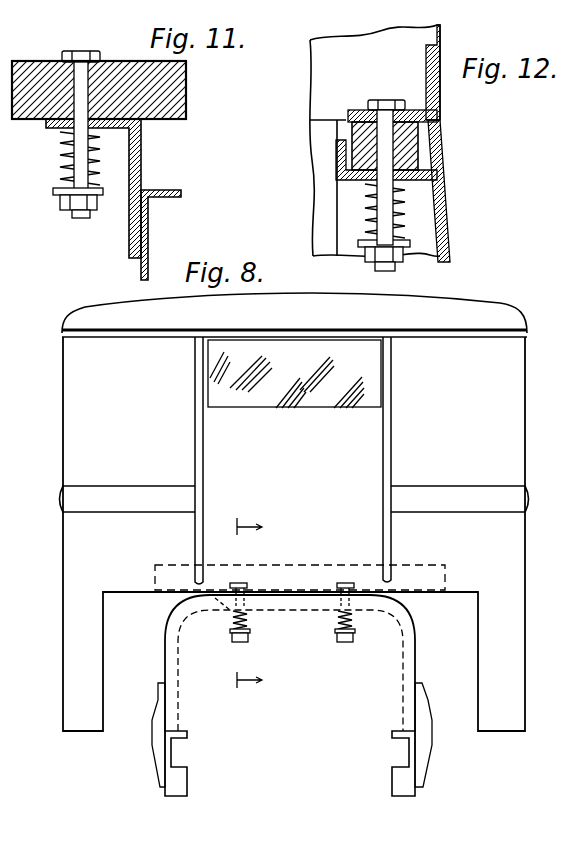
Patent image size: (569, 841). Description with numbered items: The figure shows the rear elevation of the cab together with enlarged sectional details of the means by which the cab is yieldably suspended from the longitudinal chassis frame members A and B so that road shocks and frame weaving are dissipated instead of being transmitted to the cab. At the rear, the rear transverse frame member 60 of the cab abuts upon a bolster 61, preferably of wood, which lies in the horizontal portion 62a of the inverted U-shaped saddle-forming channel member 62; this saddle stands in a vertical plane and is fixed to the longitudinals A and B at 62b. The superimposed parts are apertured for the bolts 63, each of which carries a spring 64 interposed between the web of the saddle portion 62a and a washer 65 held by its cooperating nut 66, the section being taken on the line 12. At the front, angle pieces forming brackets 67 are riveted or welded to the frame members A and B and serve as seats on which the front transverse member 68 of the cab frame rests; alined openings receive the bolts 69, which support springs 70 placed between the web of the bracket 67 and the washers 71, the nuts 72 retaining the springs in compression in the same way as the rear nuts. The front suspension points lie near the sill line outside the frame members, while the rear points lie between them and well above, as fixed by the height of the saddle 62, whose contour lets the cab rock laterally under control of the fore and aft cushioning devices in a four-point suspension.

In FIG. 8, the section line 12 is at (251, 606).
In FIG. 12, the rear transverse frame member 60 is at (426, 60).
In FIG. 8, the rear transverse frame member 60 is at (312, 564).
In FIG. 12, the bolster 61 is at (437, 126).
In FIG. 12, the saddle-forming channel member 62 is at (439, 191).
In FIG. 8, the saddle-forming channel member 62 is at (180, 700).
In FIG. 12, the horizontal portion of saddle 62a is at (432, 150).
In FIG. 8, the horizontal portion of saddle 62a is at (262, 616).
In FIG. 8, the saddle attachment 62b is at (403, 722).
In FIG. 12, the bolt 63 is at (354, 140).
In FIG. 8, the bolt 63 is at (242, 584).
In FIG. 12, the spring 64 is at (440, 212).
In FIG. 8, the spring 64 is at (345, 622).
In FIG. 12, the washer 65 is at (412, 243).
In FIG. 8, the washer 65 is at (356, 640).
In FIG. 12, the nut 66 is at (404, 262).
In FIG. 8, the nut 66 is at (239, 643).
In FIG. 11, the bracket 67 is at (143, 160).
In FIG. 11, the front transverse member 68 is at (172, 96).
In FIG. 11, the bolt 69 is at (78, 136).
In FIG. 11, the spring 70 is at (58, 185).
In FIG. 11, the washer 71 is at (106, 192).
In FIG. 11, the nut 72 is at (66, 210).
In FIG. 8, the chassis frame member A is at (405, 750).
In FIG. 11, the chassis frame member B is at (150, 221).
In FIG. 8, the chassis frame member B is at (172, 752).